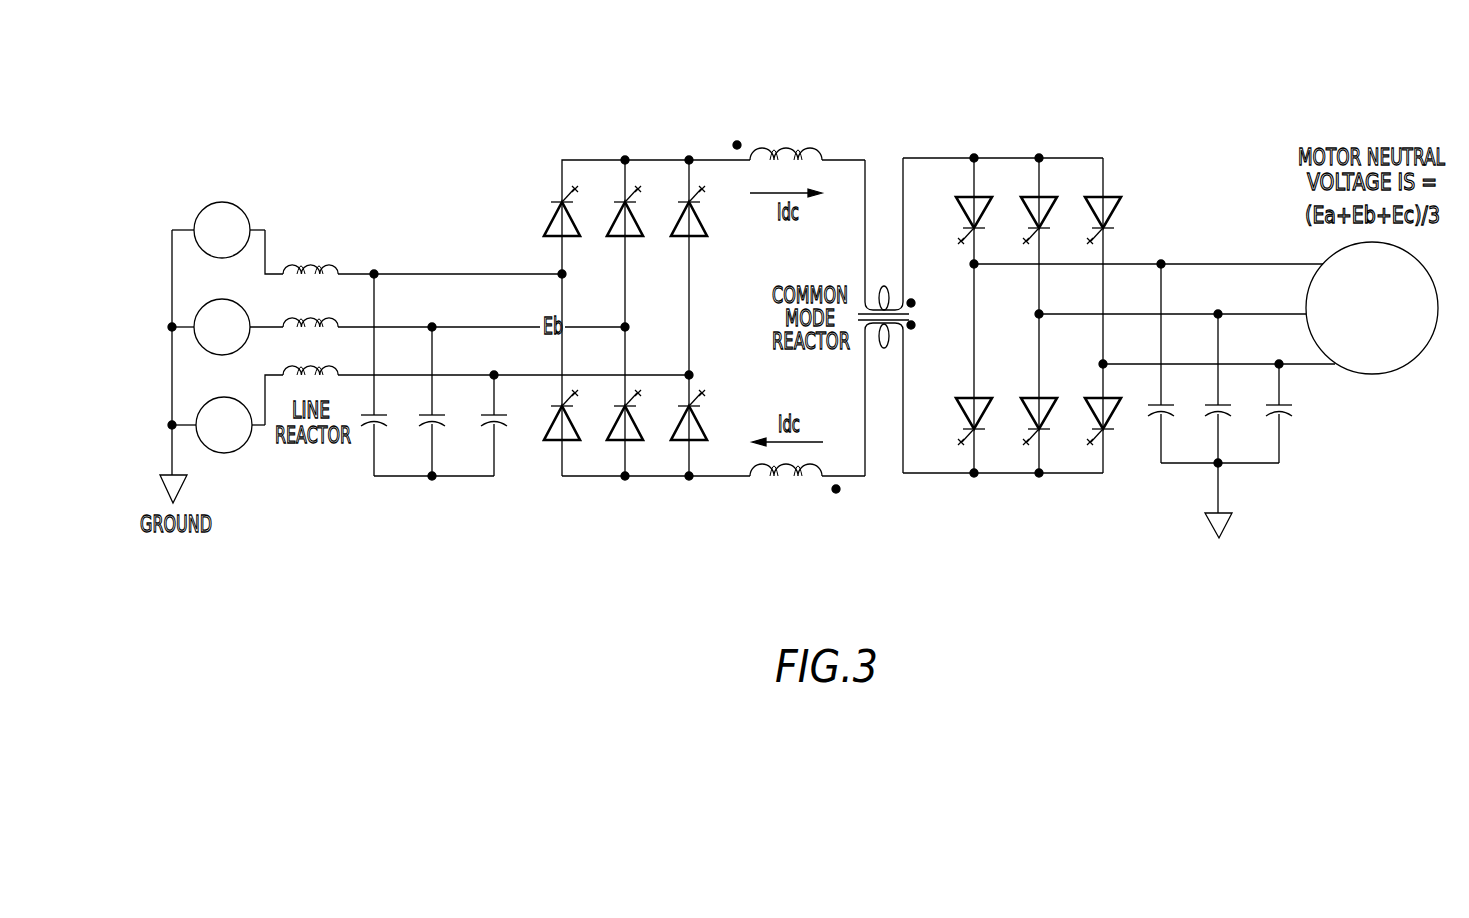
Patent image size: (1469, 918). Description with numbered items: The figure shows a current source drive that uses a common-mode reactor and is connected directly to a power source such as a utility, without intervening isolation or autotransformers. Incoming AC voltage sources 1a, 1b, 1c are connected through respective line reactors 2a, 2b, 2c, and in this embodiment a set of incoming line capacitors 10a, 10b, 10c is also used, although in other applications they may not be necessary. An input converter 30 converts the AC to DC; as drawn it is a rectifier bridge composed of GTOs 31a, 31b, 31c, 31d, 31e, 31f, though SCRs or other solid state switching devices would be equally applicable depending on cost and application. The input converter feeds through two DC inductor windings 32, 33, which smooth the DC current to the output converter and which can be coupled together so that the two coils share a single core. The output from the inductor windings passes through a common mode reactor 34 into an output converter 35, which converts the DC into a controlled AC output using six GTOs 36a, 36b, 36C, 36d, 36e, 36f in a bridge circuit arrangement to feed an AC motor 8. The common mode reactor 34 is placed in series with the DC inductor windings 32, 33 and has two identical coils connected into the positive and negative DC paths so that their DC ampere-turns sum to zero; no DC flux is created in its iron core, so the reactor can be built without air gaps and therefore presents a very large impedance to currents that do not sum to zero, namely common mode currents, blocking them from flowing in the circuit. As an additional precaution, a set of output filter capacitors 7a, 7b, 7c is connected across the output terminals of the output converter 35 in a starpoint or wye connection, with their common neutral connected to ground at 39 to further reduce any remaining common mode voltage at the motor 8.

The incoming AC voltage source 1a is at (215, 204).
The incoming AC voltage source 1b is at (220, 302).
The incoming AC voltage source 1c is at (222, 400).
The line reactor 2a is at (298, 265).
The line reactor 2b is at (328, 318).
The line reactor 2c is at (328, 367).
The incoming line capacitor 10a is at (379, 431).
The incoming line capacitor 10b is at (437, 431).
The incoming line capacitor 10c is at (499, 431).
The input converter 30 is at (698, 103).
The GTO 31a is at (573, 238).
The GTO 31b is at (636, 238).
The GTO 31c is at (700, 238).
The GTO 31d is at (573, 441).
The GTO 31e is at (636, 441).
The GTO 31f is at (700, 441).
The DC inductor winding 32 is at (812, 146).
The DC inductor winding 33 is at (810, 487).
The common mode reactor 34 is at (880, 346).
The output converter 35 is at (1112, 98).
The GTO 36a is at (985, 196).
The GTO 36b is at (1050, 196).
The GTO 36C is at (1113, 196).
The GTO 36d is at (965, 397).
The GTO 36e is at (1030, 397).
The GTO 36f is at (1095, 397).
The output capacitor 7a is at (1168, 421).
The output capacitor 7b is at (1225, 421).
The output capacitor 7c is at (1286, 421).
The ground 39 is at (1233, 523).
The AC motor 8 is at (1378, 375).